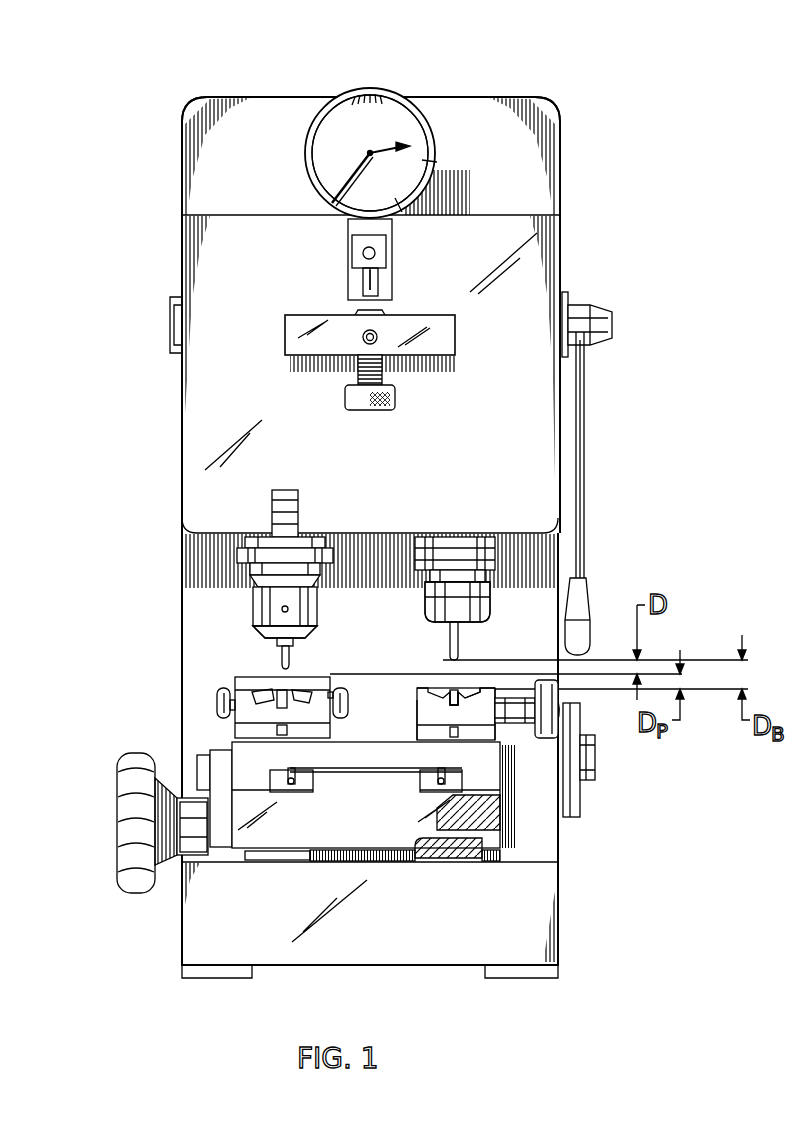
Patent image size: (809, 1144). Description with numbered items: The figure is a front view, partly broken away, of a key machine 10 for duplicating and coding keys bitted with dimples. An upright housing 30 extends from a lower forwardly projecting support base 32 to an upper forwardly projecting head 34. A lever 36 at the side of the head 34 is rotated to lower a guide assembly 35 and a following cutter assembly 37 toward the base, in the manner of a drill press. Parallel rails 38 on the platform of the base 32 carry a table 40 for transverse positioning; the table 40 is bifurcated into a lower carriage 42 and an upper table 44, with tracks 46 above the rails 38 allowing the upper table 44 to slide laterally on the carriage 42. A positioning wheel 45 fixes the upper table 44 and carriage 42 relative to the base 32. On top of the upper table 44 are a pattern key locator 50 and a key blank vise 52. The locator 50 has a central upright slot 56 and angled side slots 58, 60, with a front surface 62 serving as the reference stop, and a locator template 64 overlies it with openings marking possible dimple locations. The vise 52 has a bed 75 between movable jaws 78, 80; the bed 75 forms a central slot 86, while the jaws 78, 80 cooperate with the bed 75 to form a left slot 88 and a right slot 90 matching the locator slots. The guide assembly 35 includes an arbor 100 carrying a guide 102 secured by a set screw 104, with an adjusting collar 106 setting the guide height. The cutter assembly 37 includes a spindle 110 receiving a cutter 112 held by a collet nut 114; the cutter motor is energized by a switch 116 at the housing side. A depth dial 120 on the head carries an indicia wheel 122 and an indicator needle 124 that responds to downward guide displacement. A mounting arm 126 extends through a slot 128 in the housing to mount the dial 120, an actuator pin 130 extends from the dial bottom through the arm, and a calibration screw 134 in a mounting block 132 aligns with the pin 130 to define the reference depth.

The key machine 10 is at (584, 67).
The housing 30 is at (394, 574).
The support base 32 is at (415, 949).
The head 34 is at (561, 248).
The guide assembly 35 is at (250, 621).
The lever 36 is at (590, 420).
The cutter assembly 37 is at (490, 624).
The rails 38 is at (467, 855).
The table 40 is at (355, 840).
The lower carriage 42 is at (493, 816).
The upper table 44 is at (490, 775).
The positioning wheel 45 is at (124, 815).
The tracks 46 is at (293, 783).
The pattern key locator 50 is at (222, 728).
The key blank vise 52 is at (556, 680).
The central upright slot 56 is at (281, 690).
The left slot 58 is at (262, 692).
The right slot 60 is at (310, 693).
The front surface 62 is at (318, 714).
The locator template 64 is at (348, 686).
The bed 75 is at (470, 720).
The jaw 78 is at (418, 714).
The jaw 80 is at (502, 720).
The central slot 86 is at (454, 690).
The left slot 88 is at (437, 688).
The right slot 90 is at (478, 688).
The arbor 100 is at (272, 603).
The guide 102 is at (290, 661).
The set screw 104 is at (289, 609).
The adjusting collar 106 is at (241, 557).
The spindle 110 is at (470, 561).
The cutter 112 is at (448, 636).
The collet nut 114 is at (478, 596).
The switch 116 is at (596, 764).
The depth dial 120 is at (360, 93).
The indicia wheel 122 is at (352, 120).
The indicator needle 124 is at (408, 143).
The mounting arm 126 is at (348, 251).
The slot 128 is at (362, 284).
The actuator pin 130 is at (380, 281).
The mounting block 132 is at (452, 347).
The calibration screw 134 is at (349, 392).